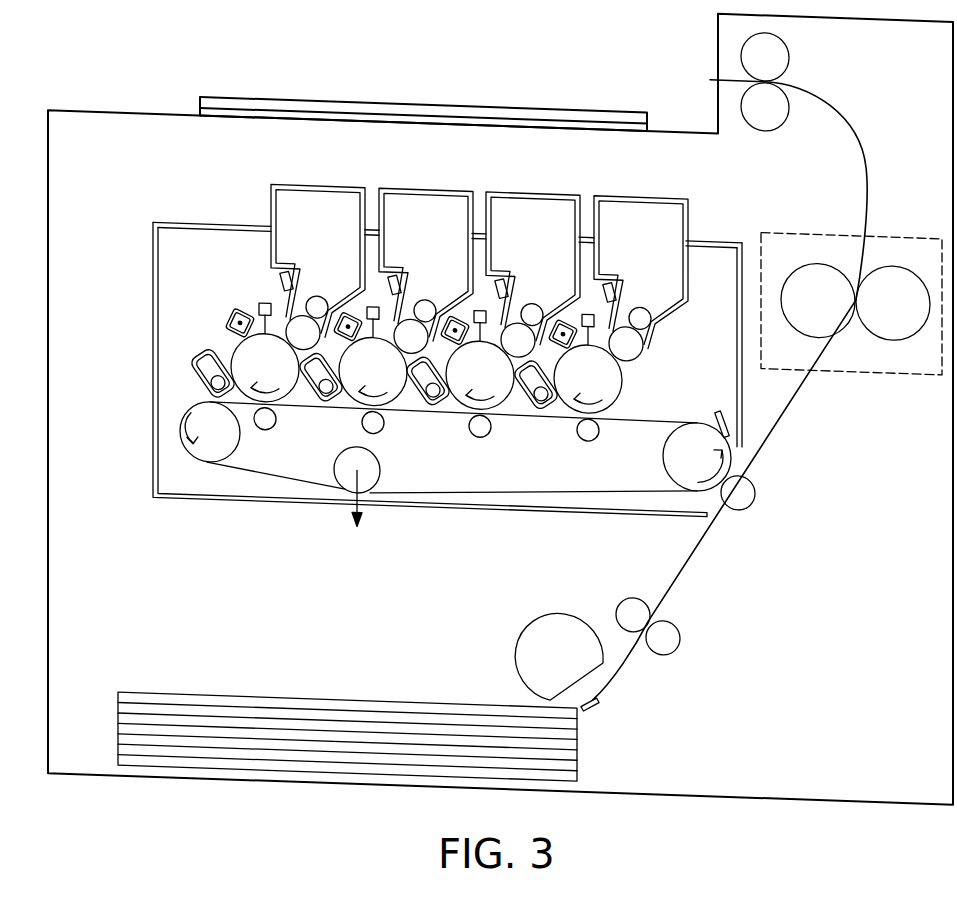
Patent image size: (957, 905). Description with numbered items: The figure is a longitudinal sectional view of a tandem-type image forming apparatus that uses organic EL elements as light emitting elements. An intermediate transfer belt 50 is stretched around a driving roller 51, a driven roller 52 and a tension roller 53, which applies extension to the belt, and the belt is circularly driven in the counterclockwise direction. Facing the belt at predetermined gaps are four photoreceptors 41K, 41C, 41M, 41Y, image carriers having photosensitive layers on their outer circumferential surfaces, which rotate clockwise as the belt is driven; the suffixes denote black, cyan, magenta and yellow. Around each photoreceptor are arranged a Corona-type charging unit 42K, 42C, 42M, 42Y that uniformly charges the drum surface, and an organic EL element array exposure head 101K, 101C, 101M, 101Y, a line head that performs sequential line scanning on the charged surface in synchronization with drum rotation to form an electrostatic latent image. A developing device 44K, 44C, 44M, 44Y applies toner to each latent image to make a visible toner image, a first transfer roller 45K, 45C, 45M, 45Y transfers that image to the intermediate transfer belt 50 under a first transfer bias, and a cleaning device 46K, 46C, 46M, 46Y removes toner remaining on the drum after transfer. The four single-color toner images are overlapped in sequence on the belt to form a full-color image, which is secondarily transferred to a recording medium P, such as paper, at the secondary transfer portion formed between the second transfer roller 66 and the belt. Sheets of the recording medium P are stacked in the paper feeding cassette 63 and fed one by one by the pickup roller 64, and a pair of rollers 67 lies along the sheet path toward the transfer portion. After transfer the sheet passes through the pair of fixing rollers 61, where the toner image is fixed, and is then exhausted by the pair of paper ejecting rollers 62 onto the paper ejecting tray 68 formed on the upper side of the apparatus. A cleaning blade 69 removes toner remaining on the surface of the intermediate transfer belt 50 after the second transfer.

The paper ejecting tray 68 is at (147, 105).
The recording medium P is at (460, 81).
The intermediate transfer belt 50 is at (280, 474).
The driving roller 51 is at (208, 453).
The driven roller 52 is at (692, 416).
The tension roller 53 is at (372, 469).
The cleaning blade 69 is at (724, 387).
The second transfer roller 66 is at (756, 466).
The fixing rollers 61 is at (897, 178).
The paper ejecting rollers 62 is at (818, 40).
The registration rollers 67 is at (704, 594).
The pickup roller 64 is at (560, 593).
The paper feeding cassette 63 is at (253, 658).
The developing device 44Y is at (318, 267).
The developing device 44M is at (426, 271).
The developing device 44C is at (533, 275).
The developing device 44K is at (641, 279).
The charging unit 42Y is at (245, 329).
The charging unit 42M is at (373, 371).
The charging unit 42C is at (480, 375).
The charging unit 42K is at (588, 379).
The photoreceptor 41Y is at (230, 314).
The photoreceptor 41M is at (384, 382).
The photoreceptor 41C is at (485, 384).
The photoreceptor 41K is at (605, 388).
The first transfer roller 45Y is at (268, 419).
The first transfer roller 45M is at (396, 444).
The first transfer roller 45C is at (503, 451).
The first transfer roller 45K is at (613, 454).
The cleaning device 46Y is at (200, 376).
The cleaning device 46M is at (322, 401).
The cleaning device 46C is at (443, 413).
The cleaning device 46K is at (547, 417).
The organic EL element array exposure head 101Y is at (265, 291).
The organic EL element array exposure head 101M is at (338, 296).
The organic EL element array exposure head 101C is at (446, 299).
The organic EL element array exposure head 101K is at (554, 300).